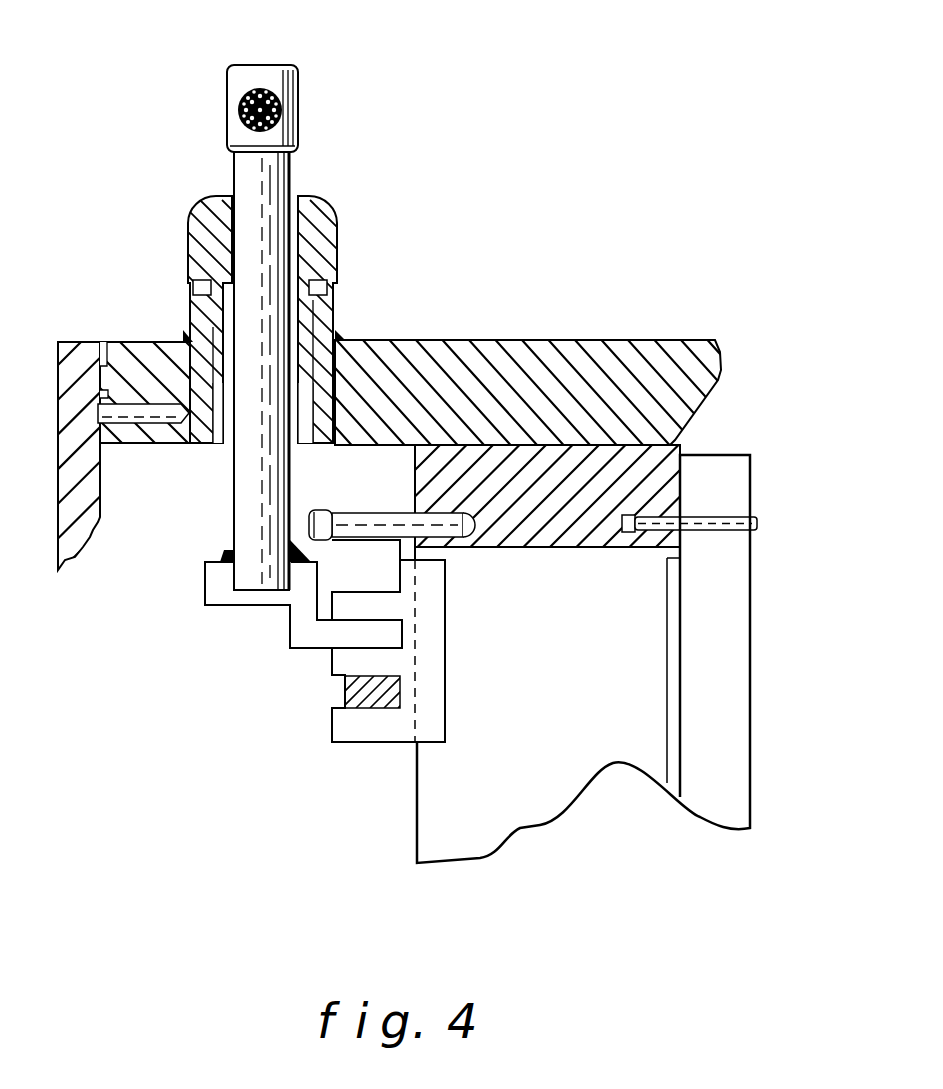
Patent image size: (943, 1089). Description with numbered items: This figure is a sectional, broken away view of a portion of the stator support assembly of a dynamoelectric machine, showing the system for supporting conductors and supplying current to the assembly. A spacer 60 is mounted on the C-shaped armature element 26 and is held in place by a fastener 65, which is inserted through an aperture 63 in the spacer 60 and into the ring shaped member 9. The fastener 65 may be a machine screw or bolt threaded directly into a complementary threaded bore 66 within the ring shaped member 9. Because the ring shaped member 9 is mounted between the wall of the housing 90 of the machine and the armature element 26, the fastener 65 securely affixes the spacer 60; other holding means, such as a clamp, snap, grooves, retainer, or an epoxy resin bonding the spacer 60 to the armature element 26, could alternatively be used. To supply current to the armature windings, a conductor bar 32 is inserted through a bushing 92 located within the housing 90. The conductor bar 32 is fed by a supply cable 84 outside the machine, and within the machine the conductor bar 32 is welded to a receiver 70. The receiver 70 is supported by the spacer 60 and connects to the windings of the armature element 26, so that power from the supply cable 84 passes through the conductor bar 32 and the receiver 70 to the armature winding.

The ring shaped member 9 is at (673, 450).
The C-shaped armature element 26 is at (555, 788).
The conductor bar 32 is at (295, 173).
The spacer 60 is at (330, 733).
The aperture 63 is at (320, 512).
The fastener 65 is at (370, 520).
The threaded bore 66 is at (483, 548).
The receiver 70 is at (205, 600).
The supply cable 84 is at (295, 100).
The housing 90 is at (612, 338).
The bushing 92 is at (338, 218).